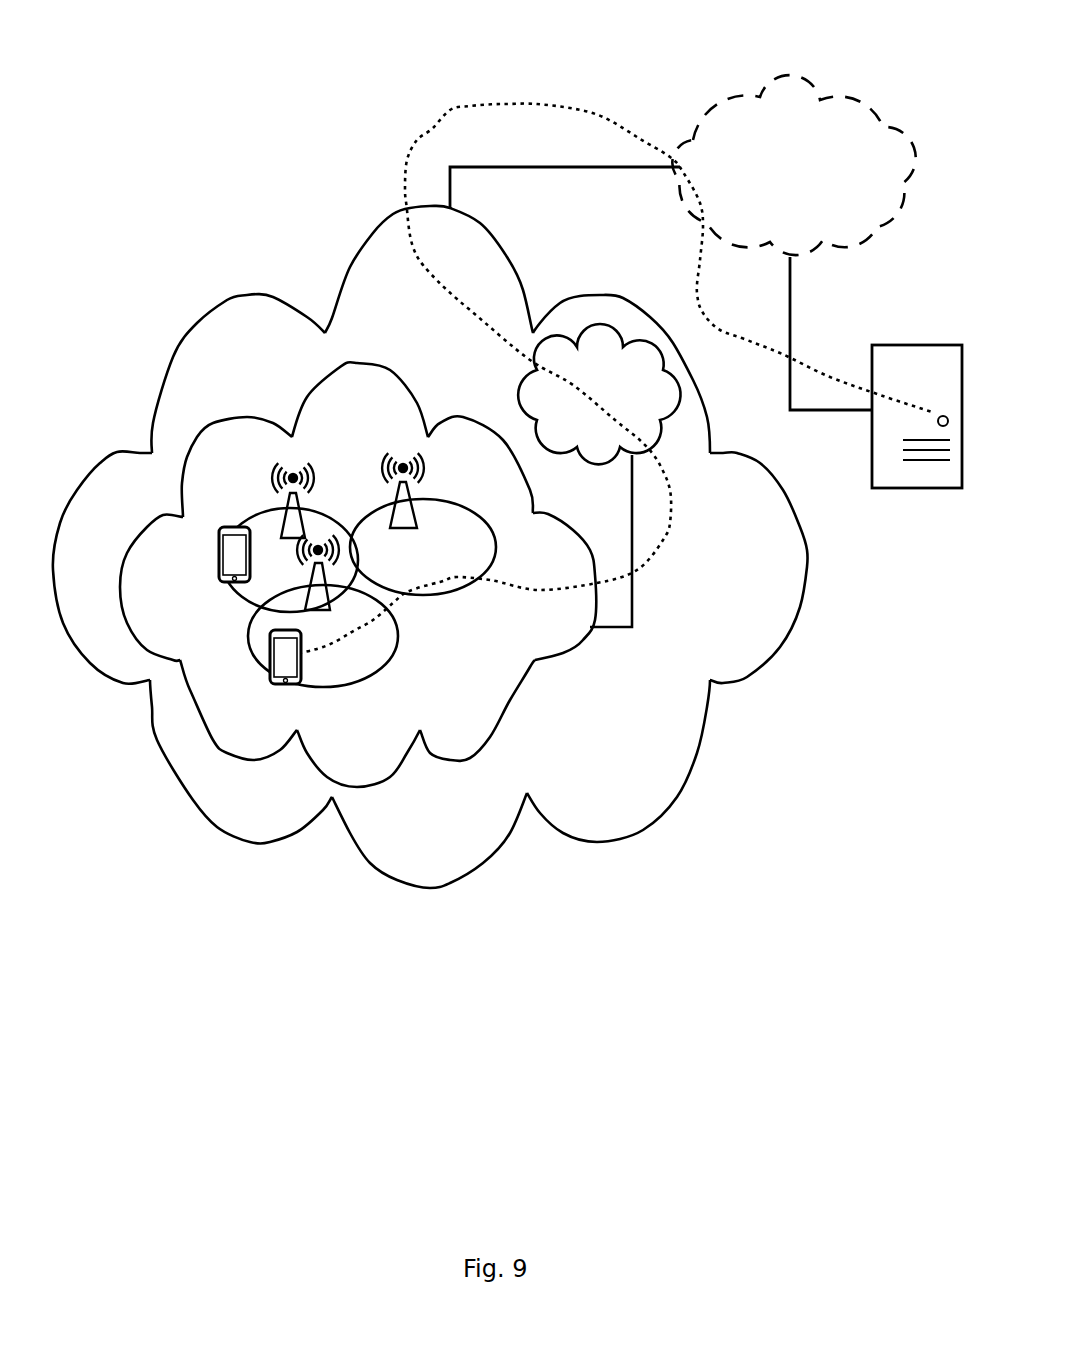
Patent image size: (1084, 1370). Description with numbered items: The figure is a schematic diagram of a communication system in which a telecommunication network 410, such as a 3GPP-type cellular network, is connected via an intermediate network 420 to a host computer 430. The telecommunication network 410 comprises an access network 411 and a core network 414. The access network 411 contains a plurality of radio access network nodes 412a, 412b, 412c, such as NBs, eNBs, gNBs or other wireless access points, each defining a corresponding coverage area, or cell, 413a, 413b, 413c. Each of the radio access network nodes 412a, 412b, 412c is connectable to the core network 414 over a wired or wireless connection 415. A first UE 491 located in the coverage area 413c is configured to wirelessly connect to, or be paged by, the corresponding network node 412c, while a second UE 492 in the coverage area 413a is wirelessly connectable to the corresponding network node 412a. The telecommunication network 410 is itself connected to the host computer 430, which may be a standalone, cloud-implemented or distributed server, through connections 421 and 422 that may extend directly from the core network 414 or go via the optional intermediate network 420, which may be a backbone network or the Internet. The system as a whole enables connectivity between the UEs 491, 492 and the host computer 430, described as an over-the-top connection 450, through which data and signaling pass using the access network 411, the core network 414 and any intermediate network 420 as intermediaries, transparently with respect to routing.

The telecommunication network 410 is at (417, 322).
The access network 411 is at (373, 432).
The radio access network node 412a is at (330, 607).
The radio access network node 412b is at (423, 483).
The radio access network node 412c is at (262, 483).
The coverage area 413a is at (400, 657).
The coverage area 413b is at (463, 590).
The coverage area 413c is at (262, 515).
The core network 414 is at (625, 381).
The connection 415 is at (632, 592).
The intermediate network 420 is at (817, 184).
The connection 421 is at (577, 167).
The connection 422 is at (823, 413).
The host computer 430 is at (935, 490).
The OTT connection 450 is at (433, 128).
The first UE 491 is at (220, 572).
The second UE 492 is at (273, 687).